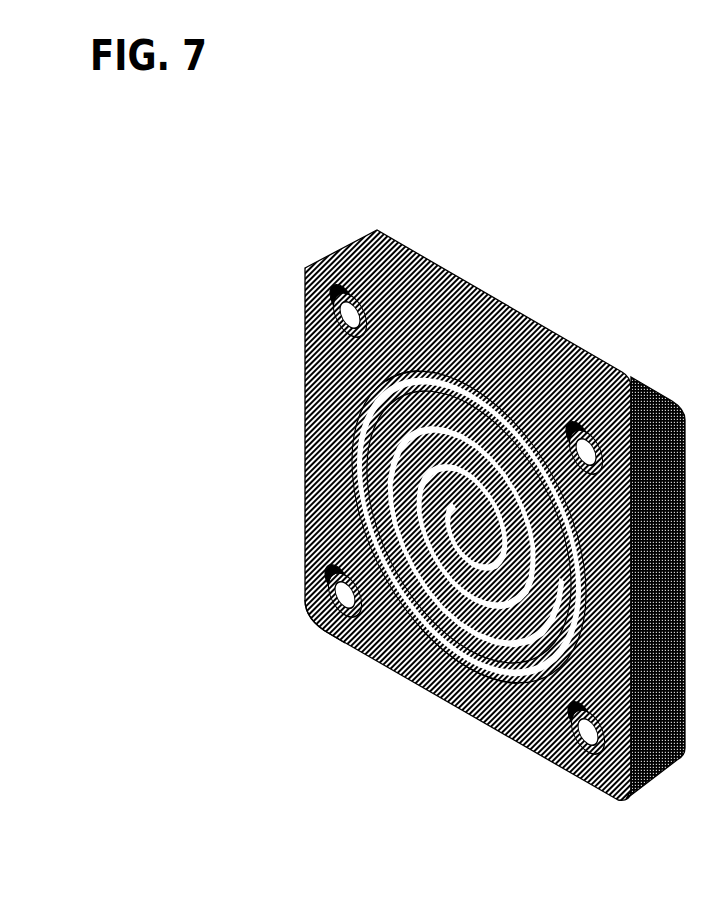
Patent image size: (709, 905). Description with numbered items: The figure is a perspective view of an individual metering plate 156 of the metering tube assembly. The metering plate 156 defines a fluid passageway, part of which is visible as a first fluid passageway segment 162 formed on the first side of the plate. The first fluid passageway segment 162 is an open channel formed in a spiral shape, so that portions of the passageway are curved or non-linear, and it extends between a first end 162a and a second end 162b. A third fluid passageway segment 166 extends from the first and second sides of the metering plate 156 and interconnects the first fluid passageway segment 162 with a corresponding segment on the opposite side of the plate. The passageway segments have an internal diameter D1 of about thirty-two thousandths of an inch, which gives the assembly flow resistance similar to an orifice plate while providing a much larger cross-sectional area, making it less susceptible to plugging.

The metering plate 156 is at (263, 233).
The third fluid passageway segment 166 is at (448, 702).
The first fluid passageway segment 162 is at (358, 464).
The first end 162a is at (340, 646).
The second end 162b is at (483, 683).
The internal diameter D1 is at (428, 452).